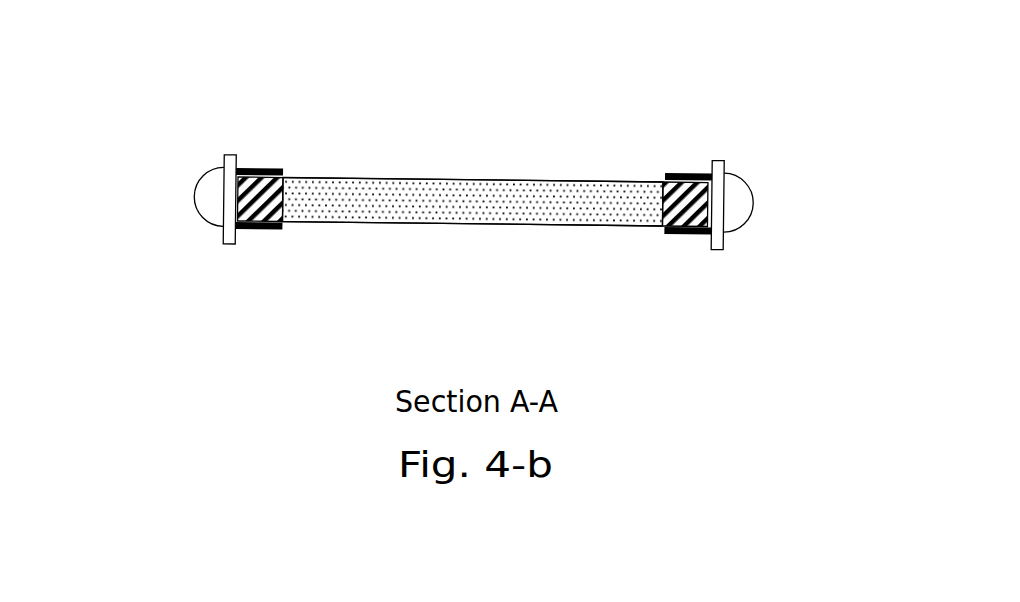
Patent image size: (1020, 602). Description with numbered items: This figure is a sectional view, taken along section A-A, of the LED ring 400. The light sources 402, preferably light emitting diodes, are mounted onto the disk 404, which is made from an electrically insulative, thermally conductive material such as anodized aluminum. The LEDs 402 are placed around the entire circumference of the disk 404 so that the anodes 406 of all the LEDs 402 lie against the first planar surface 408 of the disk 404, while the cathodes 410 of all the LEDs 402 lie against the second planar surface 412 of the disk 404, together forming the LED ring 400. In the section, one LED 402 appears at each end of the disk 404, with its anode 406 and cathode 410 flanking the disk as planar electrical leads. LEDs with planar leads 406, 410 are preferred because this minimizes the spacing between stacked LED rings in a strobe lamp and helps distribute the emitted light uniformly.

The LED ring 400 is at (778, 80).
The light source 402 is at (195, 187).
The disk 404 is at (450, 203).
The anode 406 is at (258, 168).
The first planar surface 408 is at (490, 182).
The cathode 410 is at (272, 228).
The second planar surface 412 is at (323, 222).